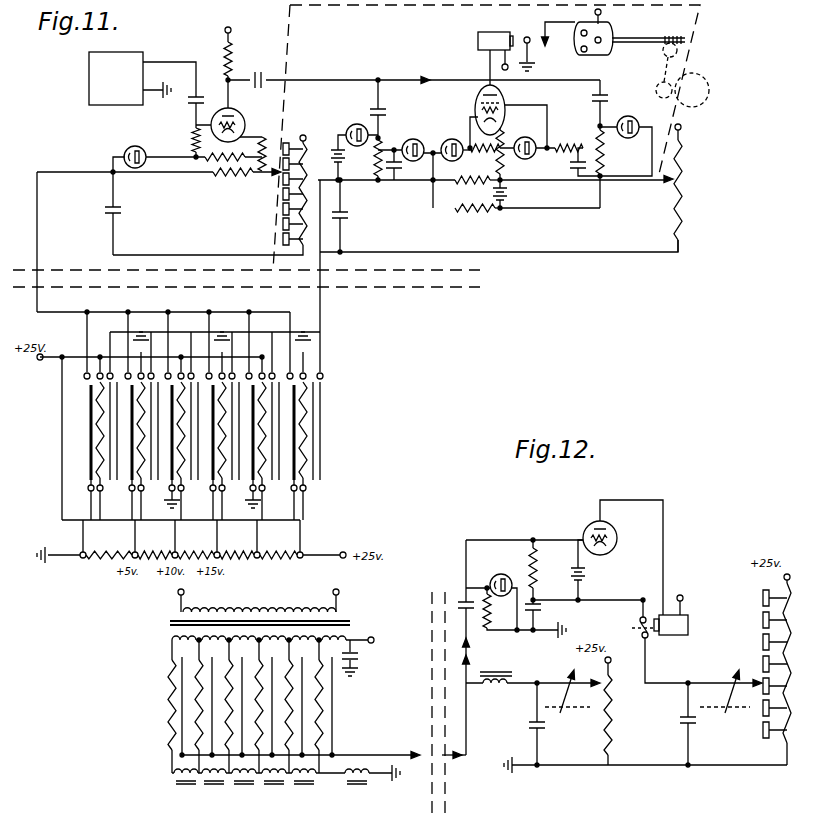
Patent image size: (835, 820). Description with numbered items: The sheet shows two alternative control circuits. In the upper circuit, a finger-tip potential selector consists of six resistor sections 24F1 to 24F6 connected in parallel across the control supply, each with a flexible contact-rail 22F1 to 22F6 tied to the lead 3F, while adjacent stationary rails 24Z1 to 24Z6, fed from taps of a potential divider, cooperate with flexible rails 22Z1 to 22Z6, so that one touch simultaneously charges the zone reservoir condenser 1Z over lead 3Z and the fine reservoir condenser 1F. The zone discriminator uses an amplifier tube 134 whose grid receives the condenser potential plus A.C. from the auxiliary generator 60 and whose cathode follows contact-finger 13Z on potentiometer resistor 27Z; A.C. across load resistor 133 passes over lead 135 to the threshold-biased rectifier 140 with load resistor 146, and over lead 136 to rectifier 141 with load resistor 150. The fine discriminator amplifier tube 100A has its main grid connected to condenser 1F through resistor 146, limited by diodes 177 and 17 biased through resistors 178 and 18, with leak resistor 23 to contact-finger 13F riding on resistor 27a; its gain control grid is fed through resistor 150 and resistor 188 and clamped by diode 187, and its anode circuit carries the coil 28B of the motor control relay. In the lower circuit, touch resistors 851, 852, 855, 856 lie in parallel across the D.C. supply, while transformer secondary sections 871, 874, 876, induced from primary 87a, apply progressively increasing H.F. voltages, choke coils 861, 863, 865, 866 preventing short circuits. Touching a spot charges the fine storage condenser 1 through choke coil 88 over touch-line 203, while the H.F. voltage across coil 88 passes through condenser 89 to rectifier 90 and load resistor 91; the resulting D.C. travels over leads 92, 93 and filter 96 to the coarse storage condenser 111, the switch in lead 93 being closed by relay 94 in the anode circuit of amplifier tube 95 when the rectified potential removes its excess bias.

In FIG. 11, the auxiliary generator 60 is at (89, 103).
In FIG. 11, the load resistor 133 is at (234, 52).
In FIG. 11, the amplifier tube 134 is at (245, 112).
In FIG. 11, the contact-finger 13Z is at (283, 185).
In FIG. 11, the potentiometer resistor 27Z is at (298, 218).
In FIG. 11, the lead 3Z is at (37, 205).
In FIG. 11, the reservoir condenser 1Z is at (121, 209).
In FIG. 11, the energizing coil of motor control relay 28B is at (492, 32).
In FIG. 11, the lead 135 is at (372, 97).
In FIG. 11, the rectifier 140 is at (358, 124).
In FIG. 11, the load resistor 146 is at (376, 165).
In FIG. 11, the reservoir condenser 1F is at (345, 214).
In FIG. 11, the lead 3F is at (320, 297).
In FIG. 11, the diode 177 is at (411, 138).
In FIG. 11, the diode 17 is at (453, 138).
In FIG. 11, the resistance 18 is at (484, 152).
In FIG. 11, the leak resistor 23 is at (480, 183).
In FIG. 11, the resistor 178 is at (488, 212).
In FIG. 11, the amplifier tube 100A is at (475, 95).
In FIG. 11, the diode 187 is at (528, 137).
In FIG. 11, the resistor 188 is at (571, 145).
In FIG. 11, the load resistor 150 is at (598, 128).
In FIG. 11, the lead 136 is at (603, 92).
In FIG. 11, the rectifier 141 is at (636, 116).
In FIG. 11, the contact-finger 13F is at (668, 186).
In FIG. 11, the potentiometer resistor 27a is at (684, 202).
In FIG. 11, the resistor section 24F1 is at (90, 400).
In FIG. 11, the flexible contact-rail 22F1 is at (100, 425).
In FIG. 11, the stationary rigid contact-rail 24Z1 is at (110, 450).
In FIG. 11, the flexible contact-rail 22Z1 is at (117, 470).
In FIG. 11, the resistor section 24F6 is at (296, 400).
In FIG. 11, the flexible contact-rail 22F6 is at (305, 422).
In FIG. 11, the stationary rigid contact-rail 24Z6 is at (313, 448).
In FIG. 11, the flexible contact-rail 22Z6 is at (320, 465).
In FIG. 11, the transformer primary 87a is at (183, 602).
In FIG. 11, the transformer secondary section 871 is at (346, 630).
In FIG. 11, the transformer secondary section 876 is at (172, 643).
In FIG. 11, the transformer secondary section 874 is at (232, 644).
In FIG. 11, the touch resistor 856 is at (168, 679).
In FIG. 11, the touch resistor 855 is at (196, 706).
In FIG. 11, the touch resistor 852 is at (292, 702).
In FIG. 11, the touch resistor 851 is at (322, 728).
In FIG. 11, the choke coil 866 is at (172, 779).
In FIG. 11, the choke coil 865 is at (218, 786).
In FIG. 11, the choke coil 863 is at (284, 786).
In FIG. 11, the choke coil 861 is at (358, 786).
In FIG. 12, the lead 92 is at (516, 540).
In FIG. 12, the rectifier 90 is at (500, 574).
In FIG. 12, the amplifier tube 95 is at (614, 548).
In FIG. 12, the filter 96 is at (536, 597).
In FIG. 12, the condenser 89 is at (463, 612).
In FIG. 12, the load resistor 91 is at (490, 630).
In FIG. 12, the lead 93 is at (614, 604).
In FIG. 12, the relay 94 is at (668, 636).
In FIG. 12, the choke coil 88 is at (504, 684).
In FIG. 12, the touch-line 203 is at (468, 725).
In FIG. 12, the fine storage condenser 1 is at (541, 729).
In FIG. 12, the coarse storage condenser 111 is at (690, 727).